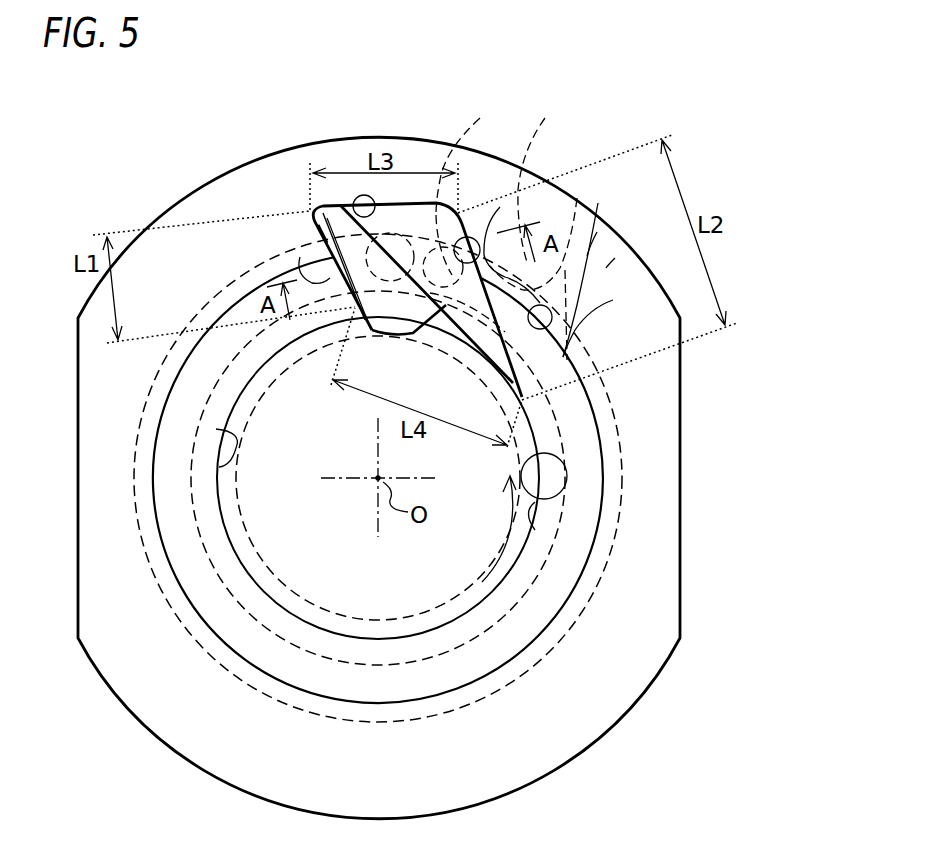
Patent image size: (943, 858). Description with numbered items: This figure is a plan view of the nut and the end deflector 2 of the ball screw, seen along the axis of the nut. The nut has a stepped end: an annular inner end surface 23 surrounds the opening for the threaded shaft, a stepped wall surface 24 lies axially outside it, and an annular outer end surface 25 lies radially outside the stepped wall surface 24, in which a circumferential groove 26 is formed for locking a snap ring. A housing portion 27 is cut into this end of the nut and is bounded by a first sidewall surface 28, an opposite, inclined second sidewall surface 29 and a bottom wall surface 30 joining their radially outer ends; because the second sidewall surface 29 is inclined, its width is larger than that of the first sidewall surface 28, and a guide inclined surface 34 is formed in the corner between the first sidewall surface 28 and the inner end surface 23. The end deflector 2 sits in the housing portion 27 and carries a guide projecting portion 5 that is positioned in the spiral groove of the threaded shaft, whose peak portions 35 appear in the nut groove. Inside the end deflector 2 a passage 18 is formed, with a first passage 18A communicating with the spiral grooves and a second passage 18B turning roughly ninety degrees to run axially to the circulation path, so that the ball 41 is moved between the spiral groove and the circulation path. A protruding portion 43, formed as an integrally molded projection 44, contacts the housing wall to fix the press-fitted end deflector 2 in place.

The end deflector 2 is at (414, 220).
The guide projecting portion 5 is at (378, 336).
The passage 18 is at (588, 113).
The first passage 18A is at (562, 237).
The second passage 18B is at (477, 194).
The inner end surface 23 is at (613, 300).
The stepped wall surface 24 is at (597, 232).
The outer end surface 25 is at (615, 258).
The groove 26 is at (571, 221).
The housing portion 27 is at (405, 186).
The first sidewall surface 28 is at (352, 213).
The second sidewall surface 29 is at (504, 214).
The bottom wall surface 30 is at (376, 201).
The guide inclined surface 34 is at (300, 257).
The peak portions 35 is at (227, 465).
The ball 41 is at (533, 531).
The protruding portion 43 is at (301, 210).
The projection 44 is at (340, 255).